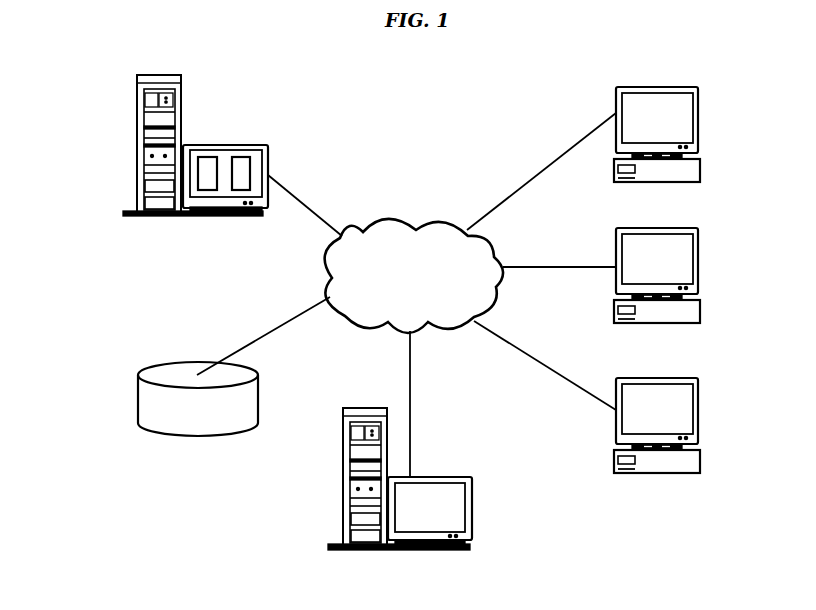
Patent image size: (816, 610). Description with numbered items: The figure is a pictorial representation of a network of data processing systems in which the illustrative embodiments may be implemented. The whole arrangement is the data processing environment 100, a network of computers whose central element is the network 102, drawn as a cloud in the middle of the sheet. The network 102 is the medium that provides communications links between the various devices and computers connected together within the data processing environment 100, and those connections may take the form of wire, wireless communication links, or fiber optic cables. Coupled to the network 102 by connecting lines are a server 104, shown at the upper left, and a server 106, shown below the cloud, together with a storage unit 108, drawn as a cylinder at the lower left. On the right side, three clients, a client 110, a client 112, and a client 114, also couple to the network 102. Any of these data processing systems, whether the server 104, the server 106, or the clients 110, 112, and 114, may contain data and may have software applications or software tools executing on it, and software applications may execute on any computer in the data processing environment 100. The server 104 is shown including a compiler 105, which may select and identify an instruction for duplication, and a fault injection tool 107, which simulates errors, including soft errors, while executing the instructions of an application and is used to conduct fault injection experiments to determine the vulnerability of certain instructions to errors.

The data processing environment 100 is at (102, 103).
The network 102 is at (414, 276).
The server 104 is at (195, 155).
The compiler 105 is at (213, 157).
The server 106 is at (400, 489).
The fault injection tool 107 is at (251, 172).
The storage unit 108 is at (198, 399).
The client 110 is at (657, 285).
The client 112 is at (657, 434).
The client 114 is at (657, 144).